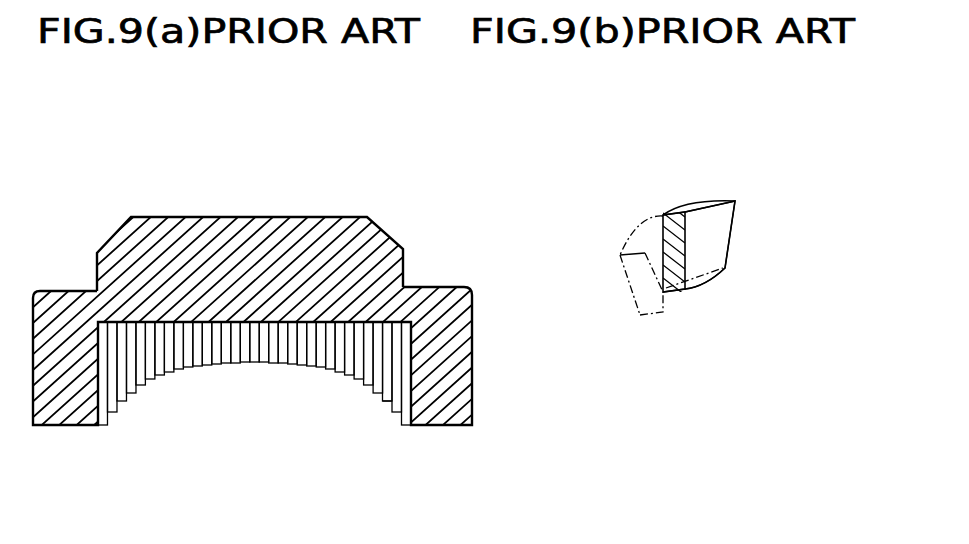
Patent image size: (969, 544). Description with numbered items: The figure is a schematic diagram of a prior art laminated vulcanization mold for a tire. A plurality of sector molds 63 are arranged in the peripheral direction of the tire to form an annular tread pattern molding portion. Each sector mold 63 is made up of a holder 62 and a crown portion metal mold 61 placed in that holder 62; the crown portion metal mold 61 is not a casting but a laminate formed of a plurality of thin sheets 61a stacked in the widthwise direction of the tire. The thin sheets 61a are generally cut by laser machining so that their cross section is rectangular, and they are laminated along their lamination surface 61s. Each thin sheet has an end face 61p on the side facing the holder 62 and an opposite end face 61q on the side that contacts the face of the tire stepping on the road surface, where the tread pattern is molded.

In FIG. 9A, the sector mold 63 is at (358, 301).
In FIG. 9A, the holder 62 is at (182, 233).
In FIG. 9A, the crown portion metal mold 61 is at (395, 346).
In FIG. 9A, the thin sheet 61a is at (119, 412).
In FIG. 9B, the thin sheet 61a is at (803, 169).
In FIG. 9A, the end face of the thin sheet on the tire stepping face side 61q is at (383, 419).
In FIG. 9B, the end face of the thin sheet on the tire stepping face side 61q is at (670, 307).
In FIG. 9B, the end face of the thin sheet on the holder side 61p is at (661, 204).
In FIG. 9B, the lamination surface 61s is at (702, 252).